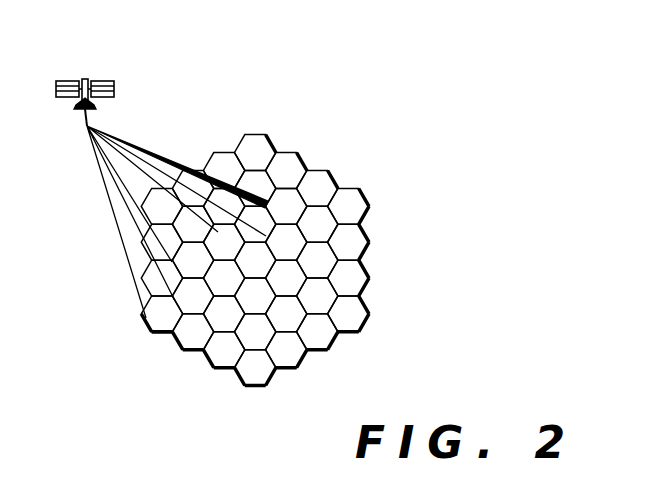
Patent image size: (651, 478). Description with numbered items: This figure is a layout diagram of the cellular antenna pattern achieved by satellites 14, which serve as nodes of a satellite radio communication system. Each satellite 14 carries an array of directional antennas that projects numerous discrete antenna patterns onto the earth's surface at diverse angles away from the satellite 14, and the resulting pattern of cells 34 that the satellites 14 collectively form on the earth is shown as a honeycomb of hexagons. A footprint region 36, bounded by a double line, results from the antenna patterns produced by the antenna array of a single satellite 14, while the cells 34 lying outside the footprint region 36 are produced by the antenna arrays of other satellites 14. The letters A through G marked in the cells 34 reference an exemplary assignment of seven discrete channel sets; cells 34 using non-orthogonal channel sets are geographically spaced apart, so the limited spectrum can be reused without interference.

The satellite 14 is at (88, 74).
The cell 34 is at (205, 168).
The footprint region 36 is at (151, 294).